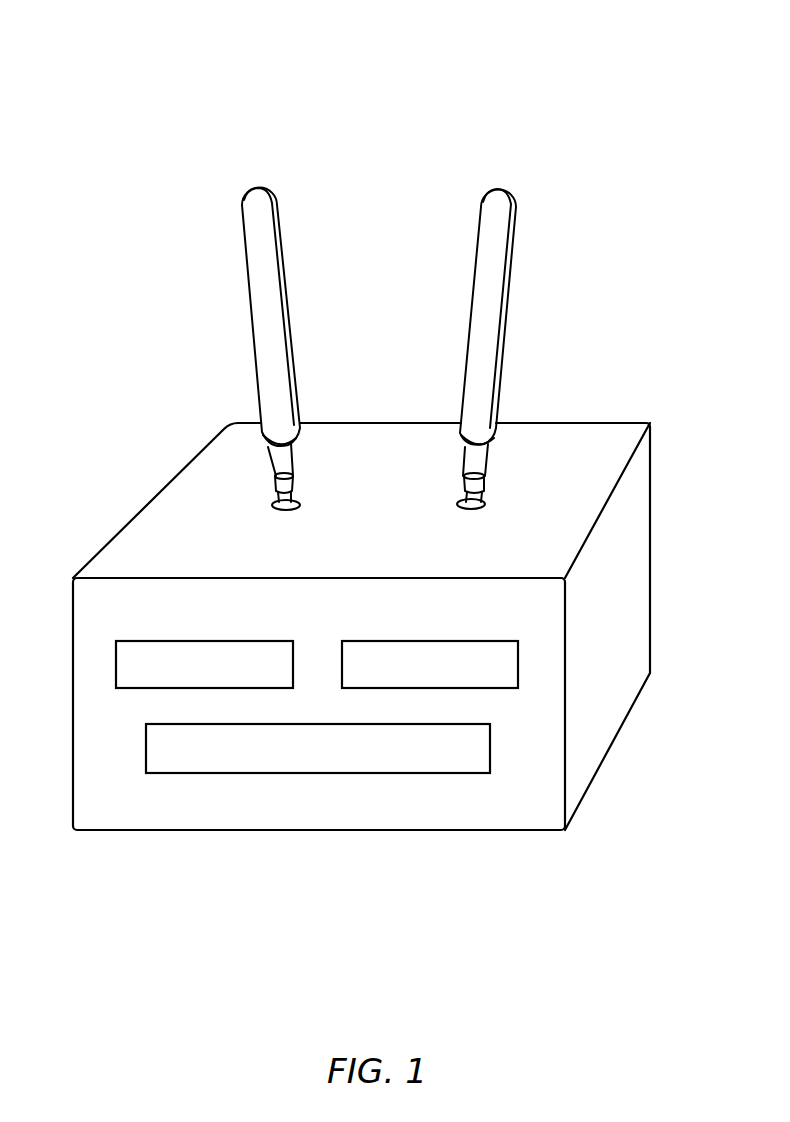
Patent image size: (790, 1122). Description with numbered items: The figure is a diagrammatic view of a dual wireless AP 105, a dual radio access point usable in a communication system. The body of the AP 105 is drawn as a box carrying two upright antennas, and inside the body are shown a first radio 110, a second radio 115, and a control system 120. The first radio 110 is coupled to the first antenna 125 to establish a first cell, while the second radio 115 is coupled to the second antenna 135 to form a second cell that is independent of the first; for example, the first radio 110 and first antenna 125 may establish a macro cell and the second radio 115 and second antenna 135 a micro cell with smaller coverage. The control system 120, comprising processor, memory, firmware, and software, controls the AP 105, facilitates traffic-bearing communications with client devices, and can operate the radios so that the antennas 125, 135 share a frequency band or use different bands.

The dual wireless AP 105 is at (582, 33).
The first radio 110 is at (280, 677).
The second radio 115 is at (505, 677).
The control system 120 is at (467, 761).
The first antenna 125 is at (243, 262).
The second antenna 135 is at (512, 260).